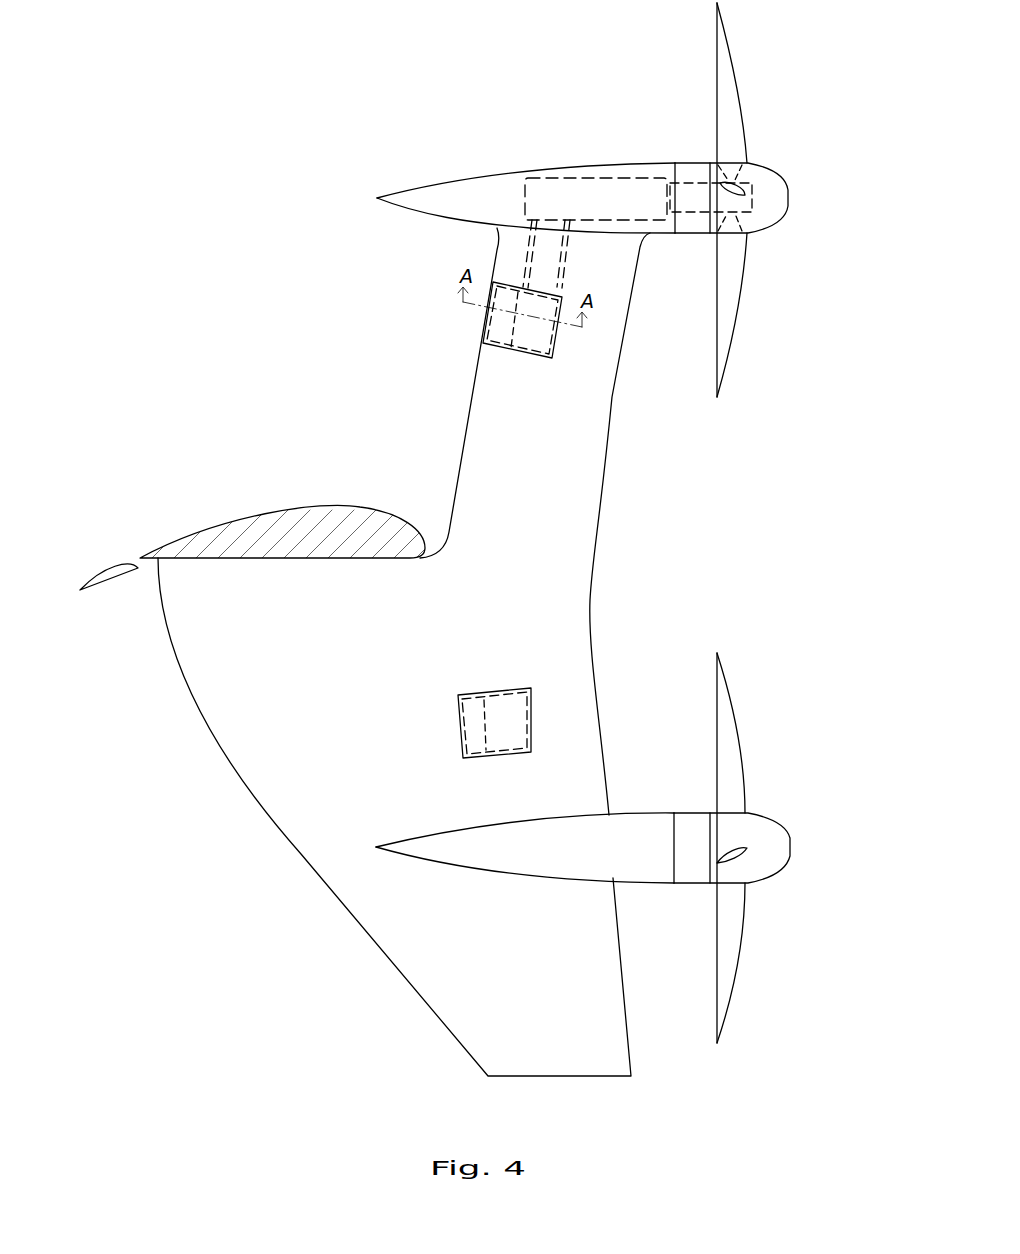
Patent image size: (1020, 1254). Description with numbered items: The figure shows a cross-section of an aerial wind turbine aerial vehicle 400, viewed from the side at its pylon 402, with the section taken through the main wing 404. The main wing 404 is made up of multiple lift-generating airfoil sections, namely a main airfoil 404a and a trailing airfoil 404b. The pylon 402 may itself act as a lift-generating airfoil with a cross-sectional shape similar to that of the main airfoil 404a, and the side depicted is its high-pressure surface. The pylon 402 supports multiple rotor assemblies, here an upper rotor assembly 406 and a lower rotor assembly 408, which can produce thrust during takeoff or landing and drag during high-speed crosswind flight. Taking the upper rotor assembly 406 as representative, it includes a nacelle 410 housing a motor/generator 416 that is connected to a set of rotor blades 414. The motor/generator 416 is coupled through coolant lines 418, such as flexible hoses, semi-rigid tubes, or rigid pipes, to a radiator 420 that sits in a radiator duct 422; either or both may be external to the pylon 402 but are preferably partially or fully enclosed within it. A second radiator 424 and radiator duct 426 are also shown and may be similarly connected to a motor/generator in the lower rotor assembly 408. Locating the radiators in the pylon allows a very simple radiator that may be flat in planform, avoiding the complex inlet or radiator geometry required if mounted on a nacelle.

The aerial vehicle 400 is at (238, 145).
The pylon 402 is at (555, 513).
The main wing 404 is at (265, 498).
The main airfoil 404a is at (315, 508).
The trailing airfoil 404b is at (122, 562).
The upper rotor assembly 406 is at (757, 200).
The lower rotor assembly 408 is at (768, 775).
The nacelle 410 is at (497, 195).
The rotor blades 414 is at (728, 115).
The motor/generator 416 is at (600, 177).
The coolant lines 418 is at (525, 253).
The radiator 420 is at (457, 360).
The radiator duct 422 is at (495, 350).
The radiator 424 is at (445, 684).
The radiator duct 426 is at (455, 725).